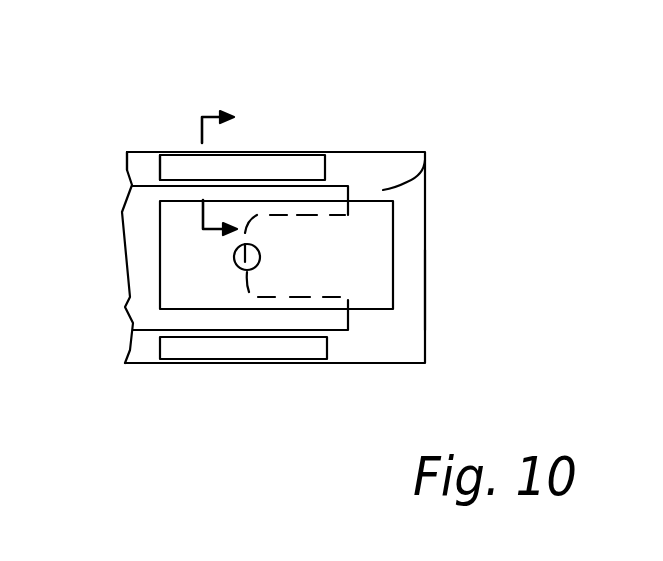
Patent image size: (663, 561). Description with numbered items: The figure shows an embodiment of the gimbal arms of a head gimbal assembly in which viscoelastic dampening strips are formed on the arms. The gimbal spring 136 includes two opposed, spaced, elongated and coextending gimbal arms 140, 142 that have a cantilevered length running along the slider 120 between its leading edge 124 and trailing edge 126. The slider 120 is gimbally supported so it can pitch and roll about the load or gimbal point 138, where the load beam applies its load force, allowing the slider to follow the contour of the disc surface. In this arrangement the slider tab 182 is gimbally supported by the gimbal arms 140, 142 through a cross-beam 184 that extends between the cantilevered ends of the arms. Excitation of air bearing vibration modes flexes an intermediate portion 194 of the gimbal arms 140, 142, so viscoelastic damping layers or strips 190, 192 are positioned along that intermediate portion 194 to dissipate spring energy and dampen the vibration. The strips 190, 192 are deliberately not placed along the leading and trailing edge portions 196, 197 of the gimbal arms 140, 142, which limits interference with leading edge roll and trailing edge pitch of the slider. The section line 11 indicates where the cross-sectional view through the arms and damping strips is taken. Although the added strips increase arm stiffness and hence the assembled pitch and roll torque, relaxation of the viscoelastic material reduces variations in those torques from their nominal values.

The section line 11- 11 is at (213, 172).
The slider 120 is at (227, 157).
The leading edge 124 is at (160, 232).
The trailing edge 126 is at (398, 235).
The gimbal spring 136 is at (402, 153).
The load or gimbal point 138 is at (253, 245).
The gimbal arm 140 is at (335, 163).
The gimbal arm 142 is at (363, 358).
The slider tab 182 is at (295, 256).
The cross-beam 184 is at (412, 285).
The viscoelastic damping strip 190 is at (172, 152).
The viscoelastic damping strip 192 is at (177, 345).
The intermediate portion 194 is at (258, 152).
The leading edge portion 196 is at (125, 155).
The trailing edge portion 197 is at (425, 158).